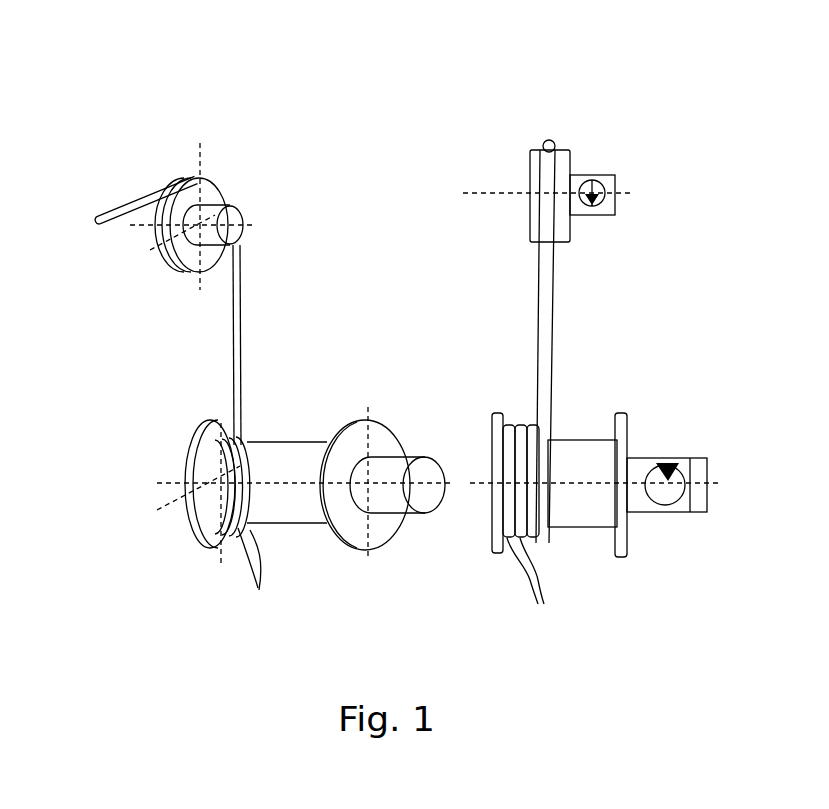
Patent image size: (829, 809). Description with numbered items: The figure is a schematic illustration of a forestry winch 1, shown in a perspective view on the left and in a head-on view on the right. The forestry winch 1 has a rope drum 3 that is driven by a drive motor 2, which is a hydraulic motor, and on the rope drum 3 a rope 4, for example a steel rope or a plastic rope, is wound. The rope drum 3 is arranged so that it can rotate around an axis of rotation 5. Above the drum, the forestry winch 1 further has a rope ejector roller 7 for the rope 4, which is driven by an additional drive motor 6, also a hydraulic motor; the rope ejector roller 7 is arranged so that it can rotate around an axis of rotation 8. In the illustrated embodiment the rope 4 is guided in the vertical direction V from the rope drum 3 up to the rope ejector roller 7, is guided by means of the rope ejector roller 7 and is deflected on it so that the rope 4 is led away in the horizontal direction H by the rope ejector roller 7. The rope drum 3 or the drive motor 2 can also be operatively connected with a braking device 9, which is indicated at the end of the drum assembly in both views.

The forestry winch 1 is at (238, 100).
The drive motor 2 is at (399, 462).
The rope drum 3 is at (293, 523).
The rope 4 is at (243, 337).
The axis of rotation 5 is at (180, 481).
The additional drive motor 6 is at (232, 212).
The rope ejector roller 7 is at (215, 177).
The axis of rotation 8 is at (148, 224).
The braking device 9 is at (420, 452).
The horizontal direction H is at (122, 164).
The vertical direction V is at (342, 372).